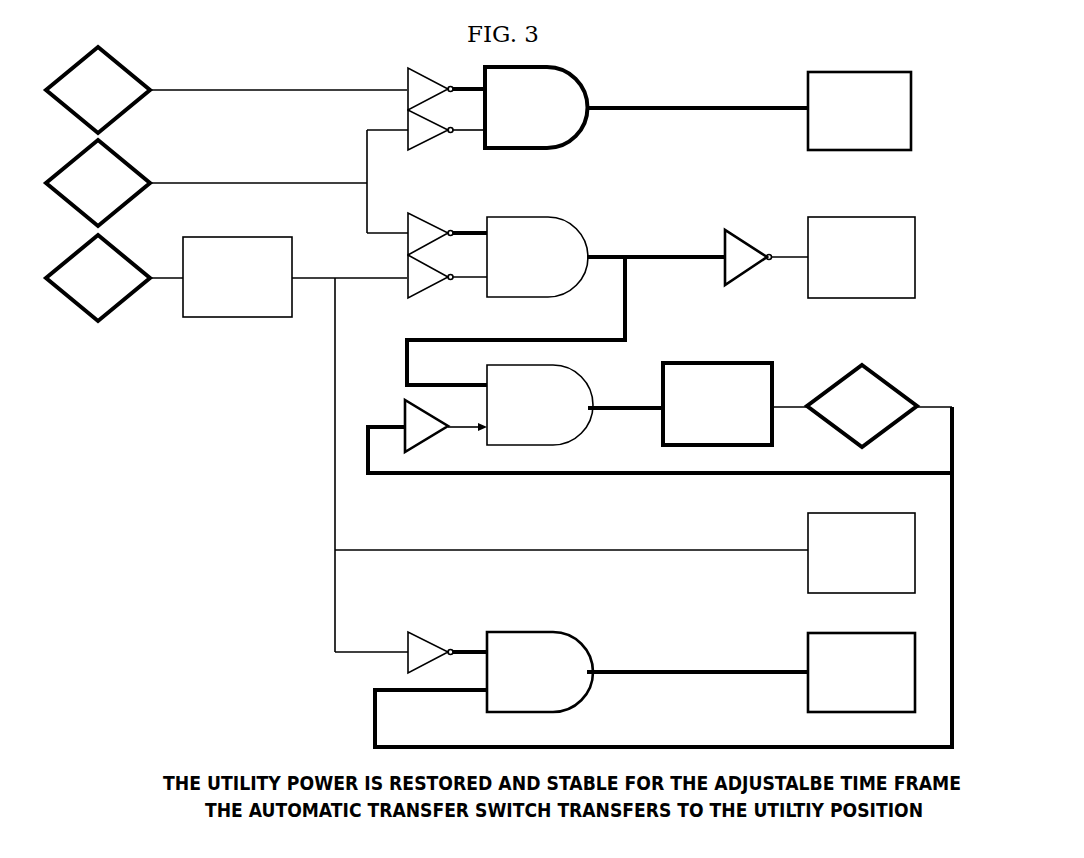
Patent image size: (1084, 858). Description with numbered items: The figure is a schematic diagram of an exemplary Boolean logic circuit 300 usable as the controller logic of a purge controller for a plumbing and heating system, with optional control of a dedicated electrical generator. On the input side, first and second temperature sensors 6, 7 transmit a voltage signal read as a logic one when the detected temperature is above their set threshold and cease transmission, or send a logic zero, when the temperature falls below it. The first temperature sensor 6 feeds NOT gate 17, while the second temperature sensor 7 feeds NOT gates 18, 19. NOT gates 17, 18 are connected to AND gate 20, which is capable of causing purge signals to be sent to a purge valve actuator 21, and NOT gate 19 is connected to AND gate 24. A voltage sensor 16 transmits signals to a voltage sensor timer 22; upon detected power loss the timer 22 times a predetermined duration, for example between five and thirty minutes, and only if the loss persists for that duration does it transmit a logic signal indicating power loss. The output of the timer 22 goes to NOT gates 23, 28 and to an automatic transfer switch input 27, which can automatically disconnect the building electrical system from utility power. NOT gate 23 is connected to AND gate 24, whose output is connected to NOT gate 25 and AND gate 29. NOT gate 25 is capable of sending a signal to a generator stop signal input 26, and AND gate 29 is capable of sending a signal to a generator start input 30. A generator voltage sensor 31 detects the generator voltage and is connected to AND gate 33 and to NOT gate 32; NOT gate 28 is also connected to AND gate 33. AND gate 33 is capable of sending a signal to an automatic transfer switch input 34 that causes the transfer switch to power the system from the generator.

The first temperature sensor 6 is at (98, 90).
The second temperature sensor 7 is at (98, 183).
The voltage sensor 16 is at (98, 278).
The voltage sensor timer 22 is at (237, 277).
The NOT gate 17 is at (430, 89).
The NOT gate 18 is at (430, 130).
The NOT gate 19 is at (430, 234).
The AND gate 20 is at (536, 107).
The purge valve actuator 21 is at (859, 111).
The NOT gate 23 is at (430, 276).
The AND gate 24 is at (537, 257).
The NOT gate 25 is at (748, 257).
The generator stop signal input 26 is at (861, 257).
The automatic transfer switch input 27 is at (861, 553).
The NOT gate 28 is at (430, 652).
The AND gate 29 is at (540, 405).
The generator start input 30 is at (717, 404).
The generator voltage sensor 31 is at (862, 406).
The NOT gate 32 is at (426, 426).
The AND gate 33 is at (540, 672).
The automatic transfer switch input 34 is at (861, 672).
The Boolean logic circuit 300 is at (228, 644).